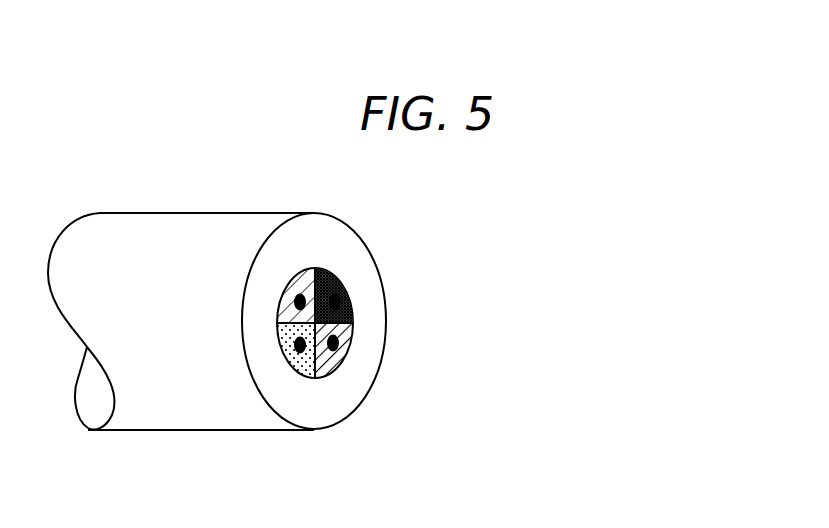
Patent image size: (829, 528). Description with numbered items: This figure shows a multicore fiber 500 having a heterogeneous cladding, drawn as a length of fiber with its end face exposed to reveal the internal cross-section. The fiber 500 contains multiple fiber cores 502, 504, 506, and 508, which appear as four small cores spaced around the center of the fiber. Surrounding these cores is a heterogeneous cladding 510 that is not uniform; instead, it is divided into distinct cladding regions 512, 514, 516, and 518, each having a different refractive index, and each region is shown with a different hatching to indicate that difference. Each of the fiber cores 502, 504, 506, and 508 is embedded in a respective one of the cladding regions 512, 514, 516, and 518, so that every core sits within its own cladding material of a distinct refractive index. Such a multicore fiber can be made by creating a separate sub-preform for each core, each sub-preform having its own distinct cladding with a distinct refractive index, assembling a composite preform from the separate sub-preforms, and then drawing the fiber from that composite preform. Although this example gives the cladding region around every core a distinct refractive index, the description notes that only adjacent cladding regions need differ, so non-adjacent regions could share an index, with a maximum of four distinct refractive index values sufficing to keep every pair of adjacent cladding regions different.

The fiber 500 is at (180, 186).
The fiber core 502 is at (300, 302).
The fiber core 504 is at (338, 298).
The fiber core 506 is at (298, 347).
The fiber core 508 is at (337, 349).
The heterogeneous cladding 510 is at (370, 315).
The cladding region 512 is at (272, 306).
The cladding region 514 is at (334, 264).
The cladding region 516 is at (302, 378).
The cladding region 518 is at (362, 346).